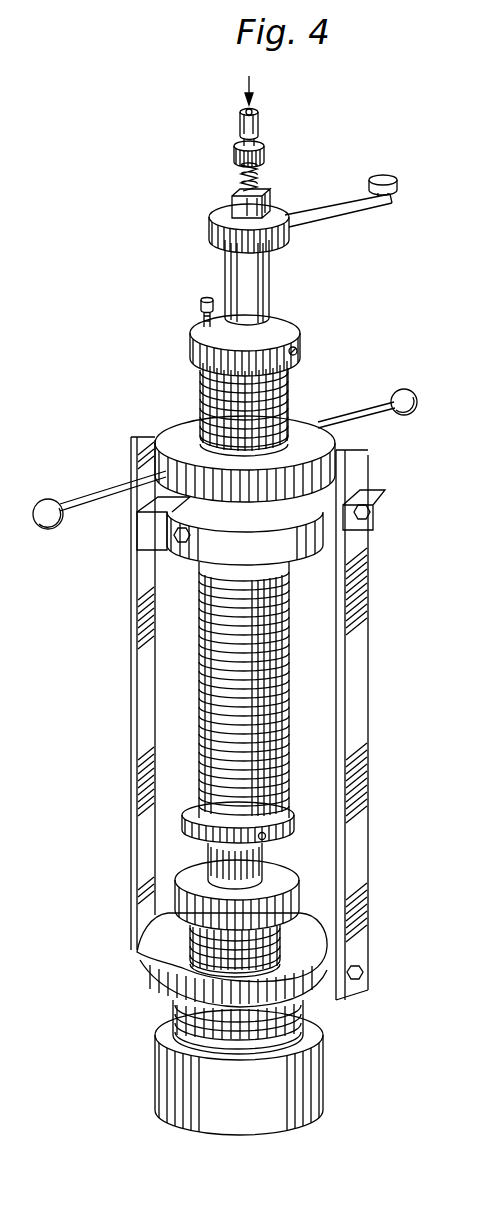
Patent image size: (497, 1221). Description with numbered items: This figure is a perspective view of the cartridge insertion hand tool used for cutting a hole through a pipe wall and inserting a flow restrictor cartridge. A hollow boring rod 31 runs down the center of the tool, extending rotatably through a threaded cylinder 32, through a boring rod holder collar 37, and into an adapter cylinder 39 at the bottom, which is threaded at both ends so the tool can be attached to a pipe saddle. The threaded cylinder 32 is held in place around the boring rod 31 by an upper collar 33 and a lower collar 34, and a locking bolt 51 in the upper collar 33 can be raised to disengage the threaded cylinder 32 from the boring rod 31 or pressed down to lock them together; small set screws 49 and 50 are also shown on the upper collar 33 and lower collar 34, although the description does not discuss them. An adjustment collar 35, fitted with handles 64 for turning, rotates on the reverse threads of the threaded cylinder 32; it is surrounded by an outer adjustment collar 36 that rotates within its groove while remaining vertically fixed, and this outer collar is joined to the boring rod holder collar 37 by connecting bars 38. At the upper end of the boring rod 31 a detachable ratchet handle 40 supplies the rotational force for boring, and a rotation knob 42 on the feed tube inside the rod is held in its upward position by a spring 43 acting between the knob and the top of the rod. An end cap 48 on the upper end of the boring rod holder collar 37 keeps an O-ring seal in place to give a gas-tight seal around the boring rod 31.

The hollow boring rod 31 is at (272, 285).
The threaded cylinder 32 is at (196, 640).
The upper collar 33 is at (300, 340).
The lower collar 34 is at (292, 818).
The adjustment collar 35 is at (178, 425).
The outer adjustment collar 36 is at (347, 474).
The boring rod holder collar 37 is at (165, 985).
The connecting bars 38 is at (366, 684).
The adapter cylinder 39 is at (321, 1092).
The handle 40 is at (364, 208).
The rotation knob 42 is at (262, 158).
The spring 43 is at (242, 173).
The end cap 48 is at (178, 882).
The set screw 49 is at (296, 356).
The set screw 50 is at (268, 843).
The locking bolt 51 is at (203, 309).
The handles 64 is at (409, 393).